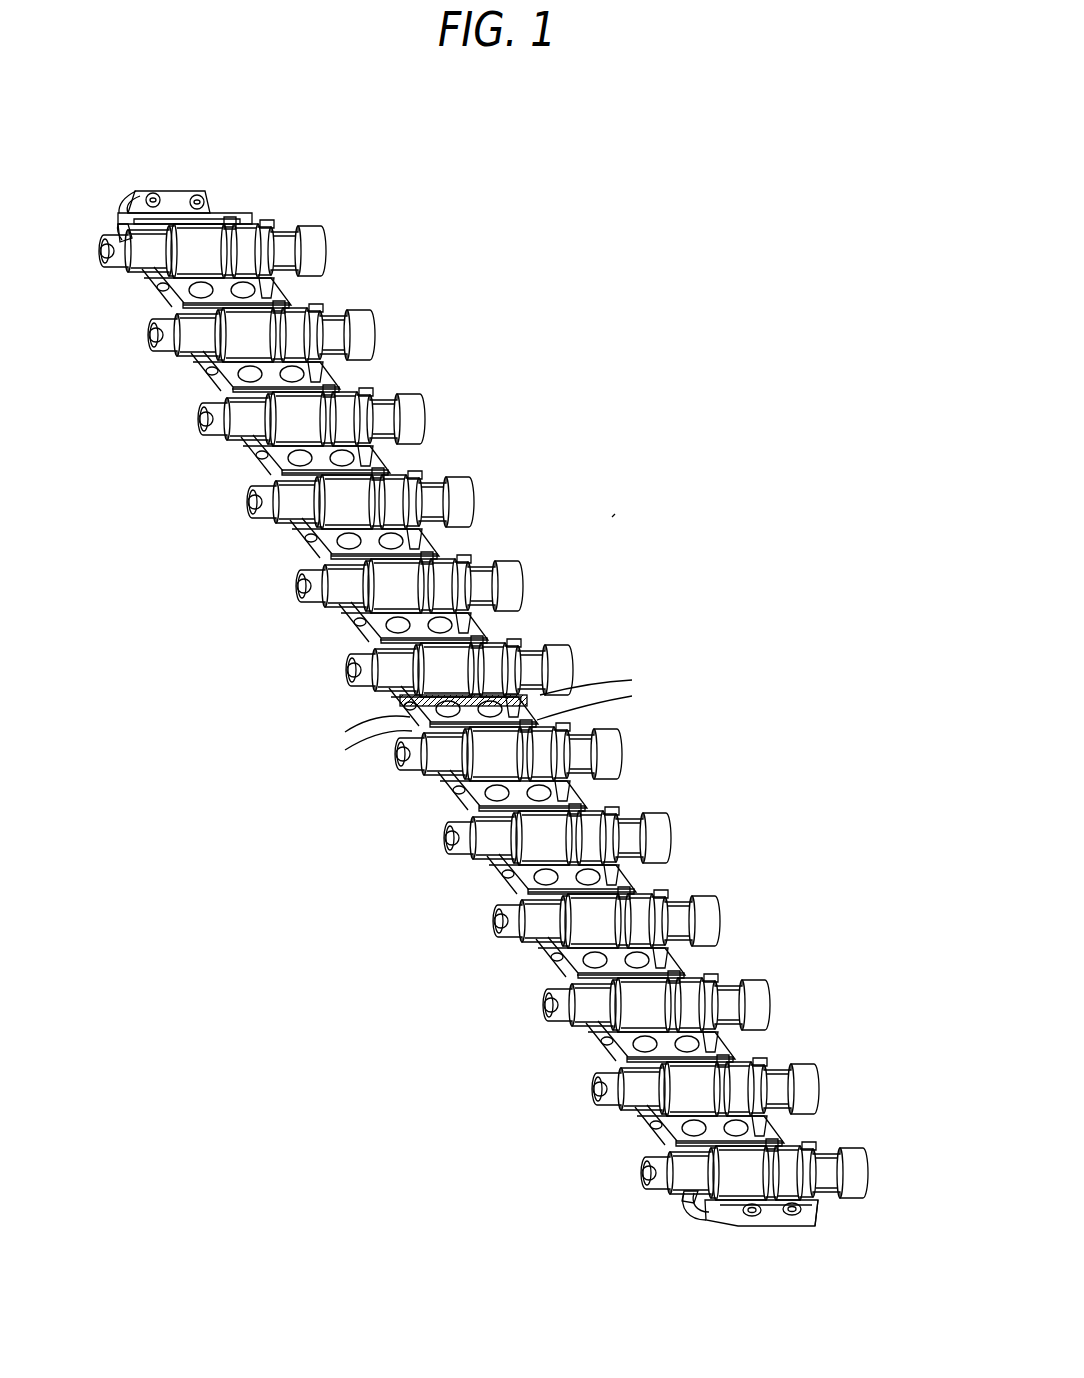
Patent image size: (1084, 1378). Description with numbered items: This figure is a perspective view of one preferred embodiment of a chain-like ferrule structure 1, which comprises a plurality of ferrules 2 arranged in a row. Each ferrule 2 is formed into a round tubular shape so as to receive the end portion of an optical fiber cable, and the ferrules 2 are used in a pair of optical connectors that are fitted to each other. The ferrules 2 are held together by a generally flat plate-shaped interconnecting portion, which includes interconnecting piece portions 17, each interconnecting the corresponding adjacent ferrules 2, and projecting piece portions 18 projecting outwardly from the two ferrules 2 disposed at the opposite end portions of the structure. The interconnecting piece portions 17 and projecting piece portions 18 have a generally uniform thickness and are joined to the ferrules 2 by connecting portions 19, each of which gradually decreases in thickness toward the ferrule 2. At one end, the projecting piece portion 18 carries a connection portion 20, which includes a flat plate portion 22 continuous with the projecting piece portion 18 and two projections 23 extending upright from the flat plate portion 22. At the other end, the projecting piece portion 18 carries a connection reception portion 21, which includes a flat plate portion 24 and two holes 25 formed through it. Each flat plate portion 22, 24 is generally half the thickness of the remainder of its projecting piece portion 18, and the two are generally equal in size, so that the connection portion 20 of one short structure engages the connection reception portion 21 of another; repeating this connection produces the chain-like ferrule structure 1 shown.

The chain-like ferrule structure 1 is at (612, 517).
The ferrule 2 is at (319, 223).
The interconnecting piece portion 17 is at (144, 299).
The projecting piece portion 18 is at (686, 1210).
The connecting portion 19 is at (276, 259).
The connection portion 20 is at (190, 188).
The connection reception portion 21 is at (752, 1230).
The flat plate portion 22 is at (215, 203).
The projection 23 is at (197, 195).
The flat plate portion 24 is at (815, 1215).
The hole 25 is at (800, 1224).